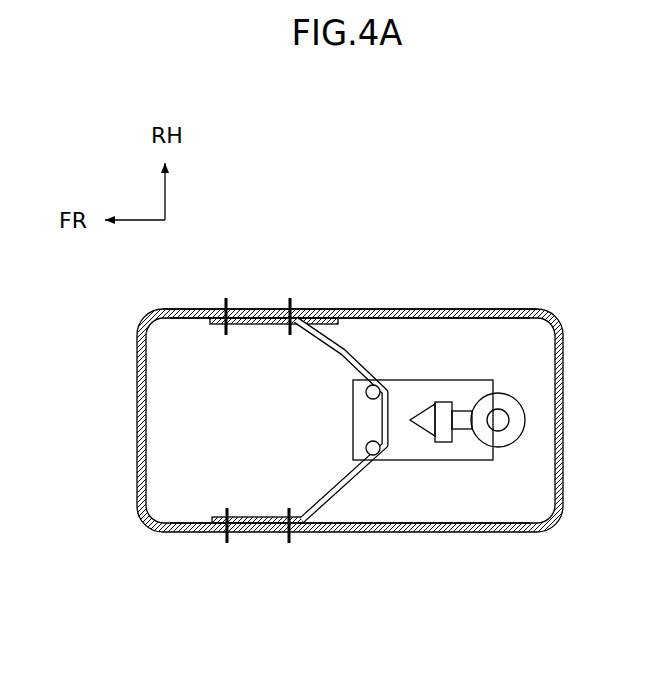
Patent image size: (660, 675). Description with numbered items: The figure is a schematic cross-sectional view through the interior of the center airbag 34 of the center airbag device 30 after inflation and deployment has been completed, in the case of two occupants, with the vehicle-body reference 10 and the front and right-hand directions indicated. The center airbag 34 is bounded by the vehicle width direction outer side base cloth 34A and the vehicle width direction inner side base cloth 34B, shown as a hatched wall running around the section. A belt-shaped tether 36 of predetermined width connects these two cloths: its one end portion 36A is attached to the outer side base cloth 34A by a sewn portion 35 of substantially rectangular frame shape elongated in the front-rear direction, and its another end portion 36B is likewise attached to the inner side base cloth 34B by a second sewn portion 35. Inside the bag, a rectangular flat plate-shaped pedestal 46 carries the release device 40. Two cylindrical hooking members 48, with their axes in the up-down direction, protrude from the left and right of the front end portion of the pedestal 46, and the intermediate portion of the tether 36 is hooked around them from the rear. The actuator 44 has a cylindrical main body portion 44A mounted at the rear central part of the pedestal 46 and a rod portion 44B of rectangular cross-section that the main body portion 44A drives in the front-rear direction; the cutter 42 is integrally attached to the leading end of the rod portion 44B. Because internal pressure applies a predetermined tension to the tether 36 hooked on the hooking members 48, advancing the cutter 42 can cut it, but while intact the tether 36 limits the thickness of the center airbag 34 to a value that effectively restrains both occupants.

The vehicle body structure 10 is at (303, 266).
The center airbag device 30 is at (350, 393).
The center airbag 34 is at (350, 407).
The outer side base cloth 34A is at (323, 312).
The inner side base cloth 34B is at (348, 532).
The sewn portion 35 is at (224, 298).
The tether 36 is at (283, 420).
The one end portion 36A is at (248, 324).
The another end portion 36B is at (245, 516).
The release device 40 is at (524, 438).
The cutter 42 is at (407, 422).
The actuator 44 is at (547, 436).
The main body portion 44A is at (515, 443).
The rod portion 44B is at (465, 430).
The pedestal 46 is at (456, 380).
The hooking members 48 is at (366, 392).